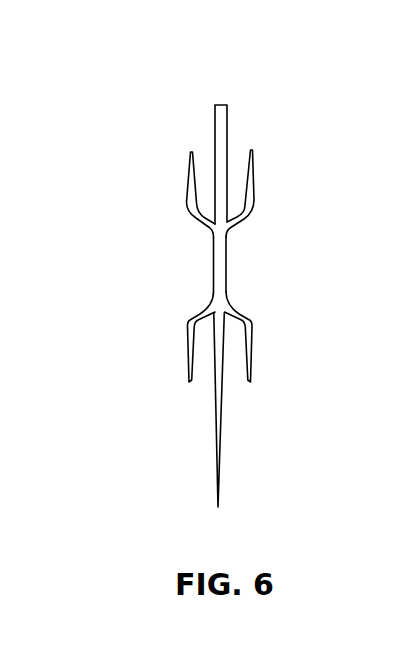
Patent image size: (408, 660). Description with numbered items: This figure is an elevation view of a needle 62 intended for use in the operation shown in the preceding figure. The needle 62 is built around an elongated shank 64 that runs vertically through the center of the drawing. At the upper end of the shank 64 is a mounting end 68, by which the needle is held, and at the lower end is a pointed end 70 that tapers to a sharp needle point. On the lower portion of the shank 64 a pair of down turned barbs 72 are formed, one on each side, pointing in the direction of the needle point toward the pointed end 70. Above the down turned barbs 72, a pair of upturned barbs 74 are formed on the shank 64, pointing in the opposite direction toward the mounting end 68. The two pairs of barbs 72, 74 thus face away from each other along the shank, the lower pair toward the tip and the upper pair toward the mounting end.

The needle 62 is at (125, 172).
The elongated shank 64 is at (213, 265).
The mounting end 68 is at (222, 103).
The pointed end 70 is at (218, 508).
The down turned barbs 72 is at (187, 357).
The upturned barbs 74 is at (186, 169).